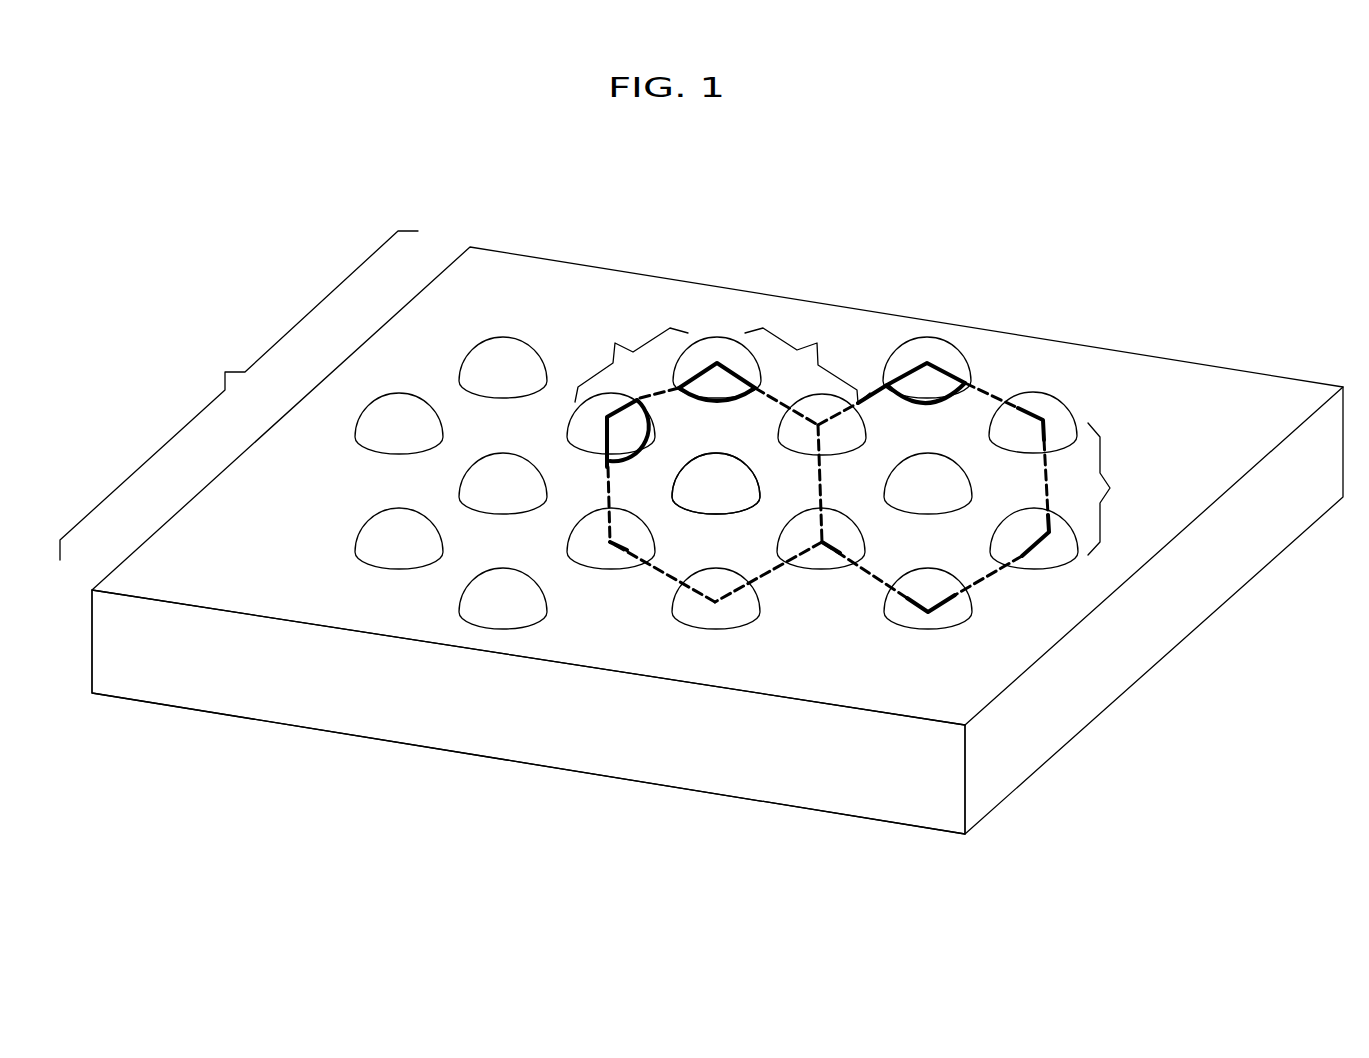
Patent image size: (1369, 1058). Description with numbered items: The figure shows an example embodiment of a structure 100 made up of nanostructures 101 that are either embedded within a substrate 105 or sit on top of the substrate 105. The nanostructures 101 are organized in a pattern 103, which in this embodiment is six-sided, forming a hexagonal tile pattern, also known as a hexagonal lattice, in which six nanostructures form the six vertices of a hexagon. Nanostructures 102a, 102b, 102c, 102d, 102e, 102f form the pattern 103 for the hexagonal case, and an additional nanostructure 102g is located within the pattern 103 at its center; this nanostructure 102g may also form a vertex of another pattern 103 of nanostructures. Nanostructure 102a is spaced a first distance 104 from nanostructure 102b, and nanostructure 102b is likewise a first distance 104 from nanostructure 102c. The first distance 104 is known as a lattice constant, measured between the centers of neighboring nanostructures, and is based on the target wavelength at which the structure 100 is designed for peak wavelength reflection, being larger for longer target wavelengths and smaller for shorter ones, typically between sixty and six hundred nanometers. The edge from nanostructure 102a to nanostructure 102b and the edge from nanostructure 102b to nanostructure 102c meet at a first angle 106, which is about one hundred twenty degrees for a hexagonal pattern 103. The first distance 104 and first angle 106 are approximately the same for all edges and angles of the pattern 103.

The structure 100 is at (263, 803).
The nanostructures 101 is at (225, 372).
The nanostructure 102a is at (608, 407).
The nanostructure 102b is at (730, 346).
The nanostructure 102c is at (827, 402).
The nanostructure 102d is at (610, 553).
The nanostructure 102e is at (720, 600).
The nanostructure 102f is at (825, 547).
The nanostructure 102g is at (714, 488).
The pattern 103 is at (875, 580).
The first distance 104 is at (616, 343).
The substrate 105 is at (263, 663).
The first angle 106 is at (623, 427).